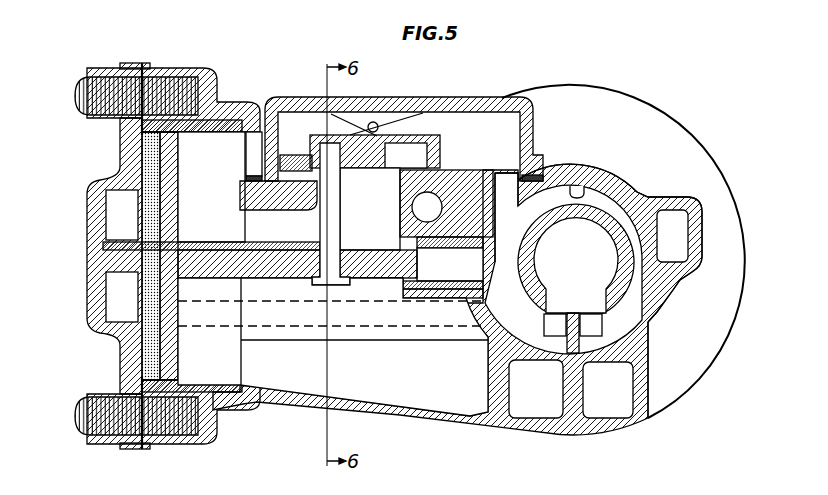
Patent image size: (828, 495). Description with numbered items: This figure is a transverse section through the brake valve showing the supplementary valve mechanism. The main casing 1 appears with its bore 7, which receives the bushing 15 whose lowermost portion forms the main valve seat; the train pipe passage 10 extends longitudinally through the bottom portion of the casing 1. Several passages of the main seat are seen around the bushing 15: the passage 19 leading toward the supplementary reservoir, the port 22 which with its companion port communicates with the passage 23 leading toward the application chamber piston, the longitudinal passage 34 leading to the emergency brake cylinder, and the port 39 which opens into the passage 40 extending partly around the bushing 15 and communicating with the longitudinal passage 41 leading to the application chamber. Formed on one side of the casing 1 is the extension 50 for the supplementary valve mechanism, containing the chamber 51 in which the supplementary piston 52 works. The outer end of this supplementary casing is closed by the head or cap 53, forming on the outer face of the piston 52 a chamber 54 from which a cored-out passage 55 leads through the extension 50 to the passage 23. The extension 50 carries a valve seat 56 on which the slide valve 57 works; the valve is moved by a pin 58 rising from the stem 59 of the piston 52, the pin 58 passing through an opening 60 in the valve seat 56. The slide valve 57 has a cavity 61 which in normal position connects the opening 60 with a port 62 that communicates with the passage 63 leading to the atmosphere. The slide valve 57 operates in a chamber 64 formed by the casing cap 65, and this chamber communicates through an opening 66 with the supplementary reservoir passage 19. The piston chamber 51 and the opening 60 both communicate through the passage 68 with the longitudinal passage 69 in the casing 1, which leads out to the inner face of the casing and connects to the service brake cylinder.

The casing 1 is at (699, 154).
The chamber or bore 7 is at (576, 265).
The passage 10 is at (608, 390).
The bushing 15 is at (614, 222).
The passage 19 is at (539, 200).
The port 22 is at (557, 325).
The passage 23 is at (554, 333).
The longitudinal passage 34 is at (681, 245).
The port 39 is at (593, 325).
The passage 40 is at (638, 314).
The longitudinal passage 41 is at (580, 170).
The extension 50 is at (258, 103).
The chamber 51 is at (211, 187).
The supplementary piston 52 is at (178, 162).
The head or cap 53 is at (96, 214).
The chamber 54 is at (122, 256).
The cored-out passage 55 is at (290, 327).
The valve seat 56 is at (406, 157).
The slide valve 57 is at (418, 152).
The pin 58 is at (338, 225).
The stem 59 is at (291, 248).
The opening 60 is at (370, 209).
The cavity 61 is at (423, 150).
The port 62 is at (424, 185).
The passage 63 is at (427, 207).
The chamber 64 is at (504, 203).
The casing cap 65 is at (404, 125).
The opening 66 is at (537, 172).
The passage 68 is at (333, 347).
The longitudinal passage 69 is at (536, 389).